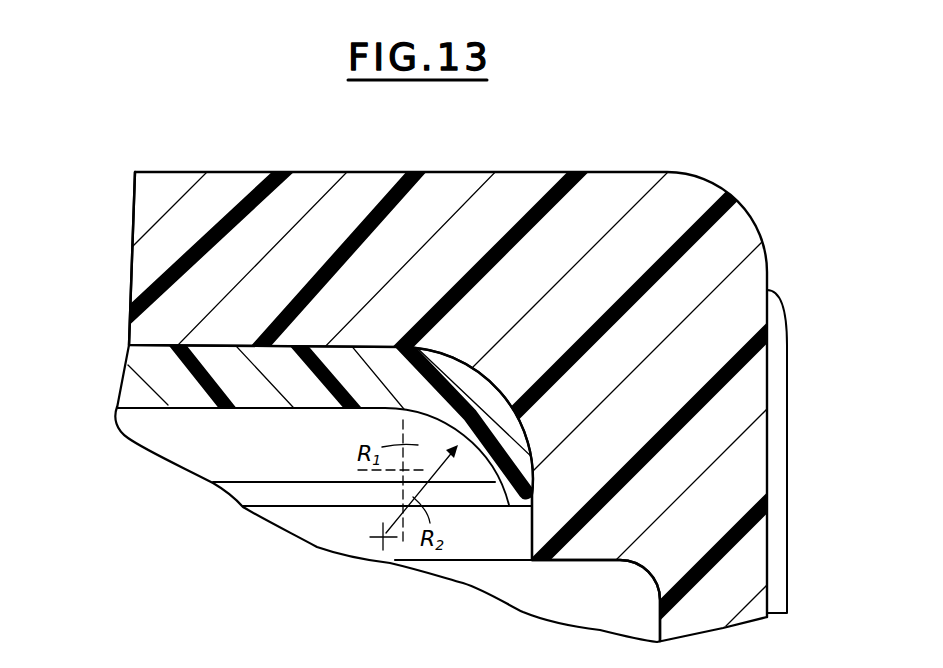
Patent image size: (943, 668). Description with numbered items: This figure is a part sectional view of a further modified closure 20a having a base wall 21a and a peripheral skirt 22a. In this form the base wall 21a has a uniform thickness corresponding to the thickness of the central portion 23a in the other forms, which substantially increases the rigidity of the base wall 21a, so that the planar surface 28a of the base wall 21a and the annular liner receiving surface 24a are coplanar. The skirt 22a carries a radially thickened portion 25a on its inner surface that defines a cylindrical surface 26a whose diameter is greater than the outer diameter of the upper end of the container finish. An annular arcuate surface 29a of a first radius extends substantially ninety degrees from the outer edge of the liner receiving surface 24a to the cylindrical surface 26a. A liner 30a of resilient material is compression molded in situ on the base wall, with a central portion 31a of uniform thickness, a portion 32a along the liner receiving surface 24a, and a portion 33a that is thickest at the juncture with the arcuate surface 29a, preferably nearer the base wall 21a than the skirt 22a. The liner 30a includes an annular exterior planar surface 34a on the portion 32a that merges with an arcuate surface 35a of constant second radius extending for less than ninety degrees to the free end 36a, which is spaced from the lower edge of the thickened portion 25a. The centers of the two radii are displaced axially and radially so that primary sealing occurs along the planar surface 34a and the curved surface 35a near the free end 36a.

The closure 20a is at (632, 158).
The base wall 21a is at (383, 185).
The peripheral skirt 22a is at (752, 546).
The central portion 23a is at (157, 318).
The annular liner receiving surface 24a is at (226, 350).
The radially thickened portion 25a is at (623, 528).
The cylindrical surface 26a is at (528, 558).
The planar surface 28a is at (150, 353).
The annular arcuate surface 29a is at (494, 378).
The liner 30a is at (263, 398).
The central portion of liner 31a is at (135, 392).
The liner portion along channel 32a is at (355, 375).
The thicker liner portion 33a is at (430, 385).
The annular exterior planar surface 34a is at (237, 410).
The arcuate surface of liner 35a is at (442, 419).
The free end 36a is at (512, 483).